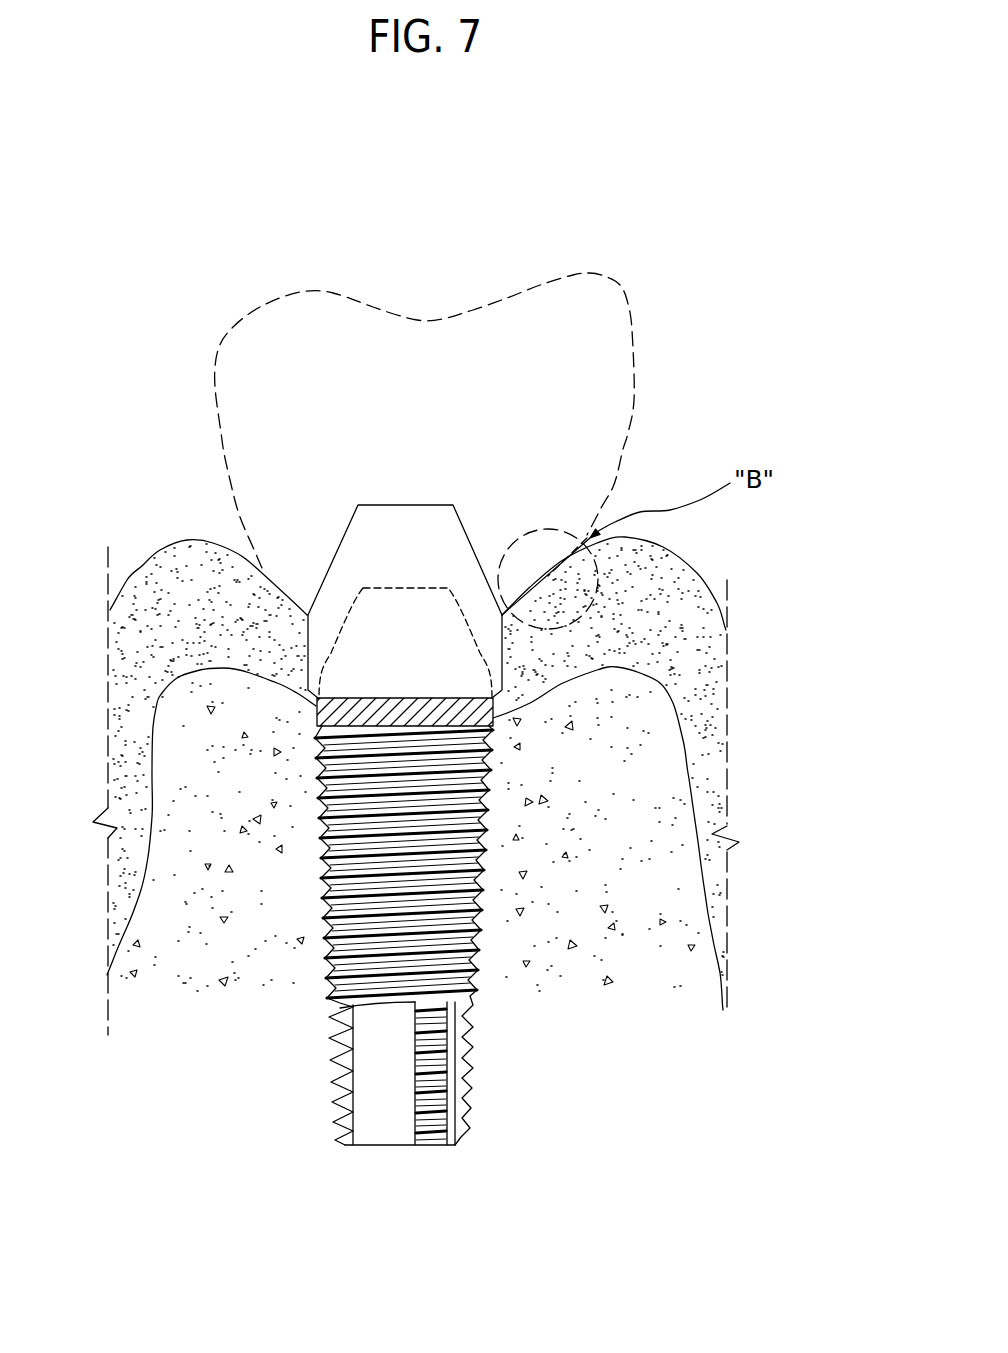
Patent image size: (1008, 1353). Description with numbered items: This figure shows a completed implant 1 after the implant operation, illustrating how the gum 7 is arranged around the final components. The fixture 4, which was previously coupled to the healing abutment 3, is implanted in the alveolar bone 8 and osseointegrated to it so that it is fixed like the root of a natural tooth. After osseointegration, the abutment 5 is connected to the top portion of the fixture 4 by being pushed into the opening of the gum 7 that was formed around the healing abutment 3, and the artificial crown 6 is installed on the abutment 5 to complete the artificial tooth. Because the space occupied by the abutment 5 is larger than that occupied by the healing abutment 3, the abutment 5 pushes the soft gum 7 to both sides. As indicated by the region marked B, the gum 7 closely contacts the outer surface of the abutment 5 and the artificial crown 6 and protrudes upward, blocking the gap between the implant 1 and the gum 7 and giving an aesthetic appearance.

The implant 1 is at (134, 312).
The healing abutment 3 is at (379, 537).
The fixture 4 is at (485, 875).
The abutment 5 is at (463, 520).
The artificial crown 6 is at (626, 289).
The gum 7 is at (700, 715).
The alveolar bone 8 is at (618, 795).